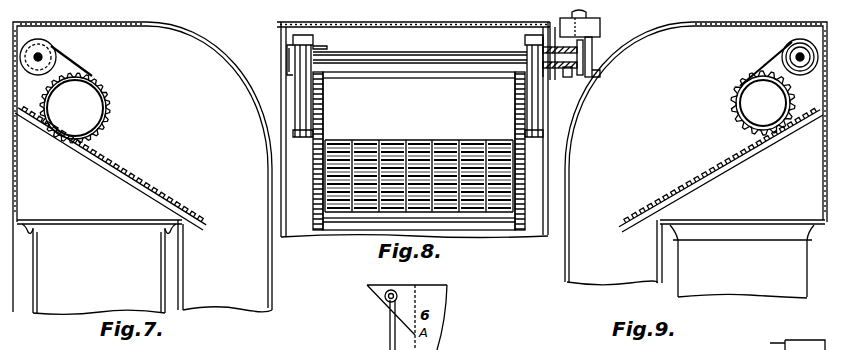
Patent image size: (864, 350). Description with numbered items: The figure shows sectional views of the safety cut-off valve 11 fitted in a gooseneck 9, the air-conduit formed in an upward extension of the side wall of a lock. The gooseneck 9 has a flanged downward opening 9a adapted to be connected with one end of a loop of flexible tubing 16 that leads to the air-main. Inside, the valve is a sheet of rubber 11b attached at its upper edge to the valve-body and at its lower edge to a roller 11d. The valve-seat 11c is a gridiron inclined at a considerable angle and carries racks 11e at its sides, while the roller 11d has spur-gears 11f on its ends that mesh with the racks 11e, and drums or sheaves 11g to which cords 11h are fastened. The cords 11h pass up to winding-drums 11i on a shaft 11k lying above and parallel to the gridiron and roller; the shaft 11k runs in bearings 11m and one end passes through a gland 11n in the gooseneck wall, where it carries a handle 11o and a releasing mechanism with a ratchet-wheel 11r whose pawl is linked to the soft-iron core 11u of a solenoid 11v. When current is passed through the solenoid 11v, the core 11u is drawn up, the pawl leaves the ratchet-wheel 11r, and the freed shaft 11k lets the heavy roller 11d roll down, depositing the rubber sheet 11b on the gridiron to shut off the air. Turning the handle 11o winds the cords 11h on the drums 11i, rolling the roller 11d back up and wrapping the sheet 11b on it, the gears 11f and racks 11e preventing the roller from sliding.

In FIG. 7, the gooseneck 9 is at (209, 51).
In FIG. 9, the gooseneck 9 is at (696, 153).
In FIG. 7, the flanged downward opening 9a is at (44, 219).
In FIG. 9, the flanged downward opening 9a is at (741, 251).
In FIG. 7, the flexible tubing 16 is at (38, 245).
In FIG. 9, the flexible tubing 16 is at (742, 261).
In FIG. 7, the safety cut-off valve 11 is at (145, 136).
In FIG. 7, the sheet of rubber 11b is at (109, 99).
In FIG. 8, the sheet of rubber 11b is at (419, 154).
In FIG. 7, the valve-seat 11c is at (104, 173).
In FIG. 8, the valve-seat 11c is at (414, 139).
In FIG. 9, the valve-seat 11c is at (711, 172).
In FIG. 7, the roller 11d is at (75, 108).
In FIG. 8, the roller 11d is at (330, 79).
In FIG. 9, the roller 11d is at (763, 103).
In FIG. 8, the racks 11e is at (313, 188).
In FIG. 9, the racks 11e is at (720, 181).
In FIG. 8, the spur-gears 11f is at (323, 103).
In FIG. 9, the spur-gears 11f is at (740, 121).
In FIG. 8, the drums or sheaves 11g is at (306, 140).
In FIG. 9, the drums or sheaves 11g is at (735, 102).
In FIG. 7, the cords 11h is at (72, 62).
In FIG. 8, the cords 11h is at (560, 115).
In FIG. 9, the cords 11h is at (760, 70).
In FIG. 7, the winding-drums 11i is at (35, 62).
In FIG. 8, the winding-drums 11i is at (323, 42).
In FIG. 9, the winding-drums 11i is at (807, 72).
In FIG. 7, the shaft 11k is at (38, 57).
In FIG. 8, the shaft 11k is at (414, 54).
In FIG. 9, the shaft 11k is at (798, 55).
In FIG. 8, the bearings 11m is at (287, 56).
In FIG. 8, the gland 11n is at (561, 61).
In FIG. 8, the handle 11o is at (598, 74).
In FIG. 8, the ratchet-wheel 11r is at (592, 40).
In FIG. 8, the soft-iron core 11u is at (600, 26).
In FIG. 8, the solenoid 11v is at (587, 14).